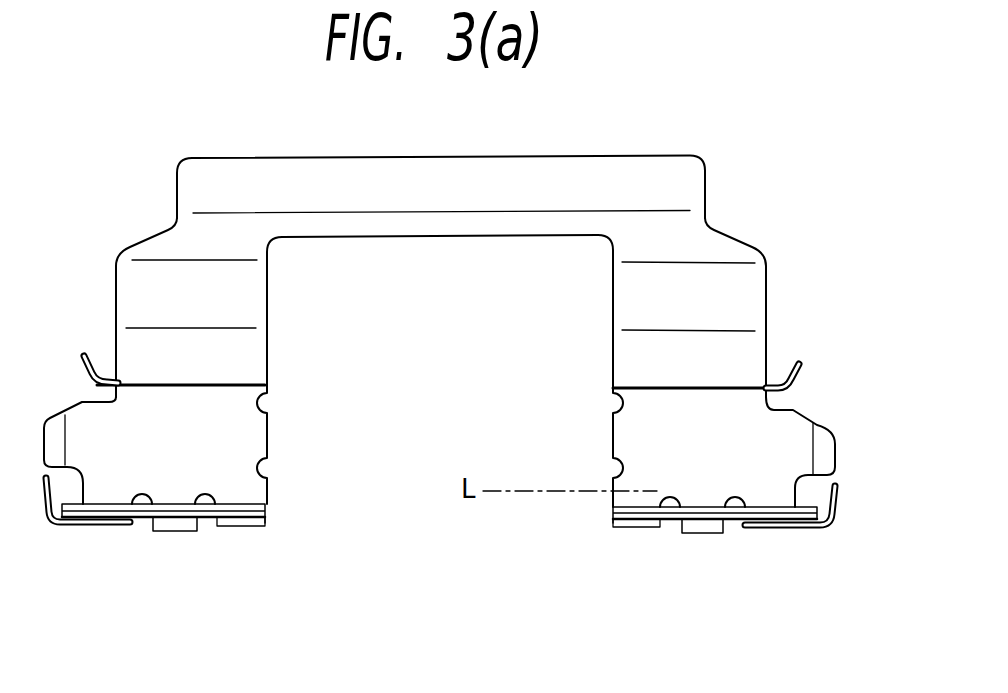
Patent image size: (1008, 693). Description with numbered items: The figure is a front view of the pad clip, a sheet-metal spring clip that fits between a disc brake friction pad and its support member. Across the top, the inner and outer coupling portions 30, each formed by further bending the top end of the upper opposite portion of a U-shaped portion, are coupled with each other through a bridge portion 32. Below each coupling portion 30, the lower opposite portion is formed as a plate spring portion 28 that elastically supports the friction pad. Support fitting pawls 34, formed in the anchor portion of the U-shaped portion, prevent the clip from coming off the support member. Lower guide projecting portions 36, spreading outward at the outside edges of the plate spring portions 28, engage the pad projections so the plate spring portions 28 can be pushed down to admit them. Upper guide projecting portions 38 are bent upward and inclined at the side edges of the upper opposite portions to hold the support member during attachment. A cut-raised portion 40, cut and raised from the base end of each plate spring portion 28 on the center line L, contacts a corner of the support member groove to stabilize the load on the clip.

The plate spring portion 28 is at (630, 528).
The coupling portion 30 is at (750, 292).
The bridge portion 32 is at (493, 172).
The support fitting pawl 34 is at (834, 440).
The lower guide projecting portion 36 is at (839, 513).
The upper guide projecting portion 38 is at (801, 375).
The cut-raised portion 40 is at (167, 531).